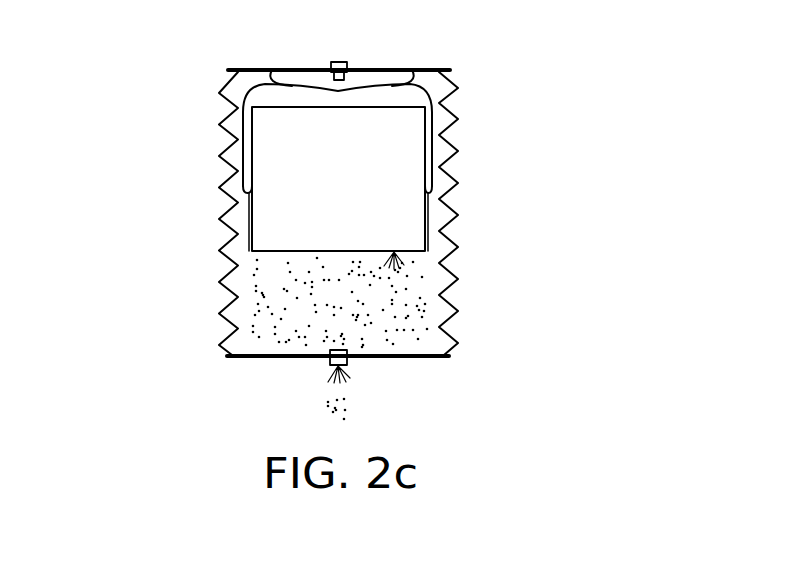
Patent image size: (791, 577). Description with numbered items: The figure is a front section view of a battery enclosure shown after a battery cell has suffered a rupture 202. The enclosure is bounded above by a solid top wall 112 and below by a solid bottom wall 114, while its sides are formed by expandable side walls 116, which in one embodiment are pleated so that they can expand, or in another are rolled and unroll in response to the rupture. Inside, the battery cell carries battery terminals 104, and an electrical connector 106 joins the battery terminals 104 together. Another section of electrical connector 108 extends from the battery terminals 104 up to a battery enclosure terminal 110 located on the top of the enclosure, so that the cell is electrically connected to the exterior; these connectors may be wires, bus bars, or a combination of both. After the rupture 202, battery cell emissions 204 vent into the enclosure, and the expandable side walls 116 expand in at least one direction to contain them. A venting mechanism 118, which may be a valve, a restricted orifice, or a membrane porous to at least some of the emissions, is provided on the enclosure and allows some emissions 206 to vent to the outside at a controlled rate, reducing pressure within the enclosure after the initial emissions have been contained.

The battery terminals 104 is at (252, 178).
The electrical connector 106 is at (243, 178).
The electrical connector 108 is at (272, 68).
The battery enclosure terminal 110 is at (337, 60).
The solid top wall 112 is at (383, 68).
The solid bottom wall 114 is at (420, 358).
The expandable side walls 116 is at (221, 246).
The venting mechanism 118 is at (327, 370).
The rupture 202 is at (400, 268).
The battery cell emissions 204 is at (395, 322).
The emissions 206 is at (353, 400).